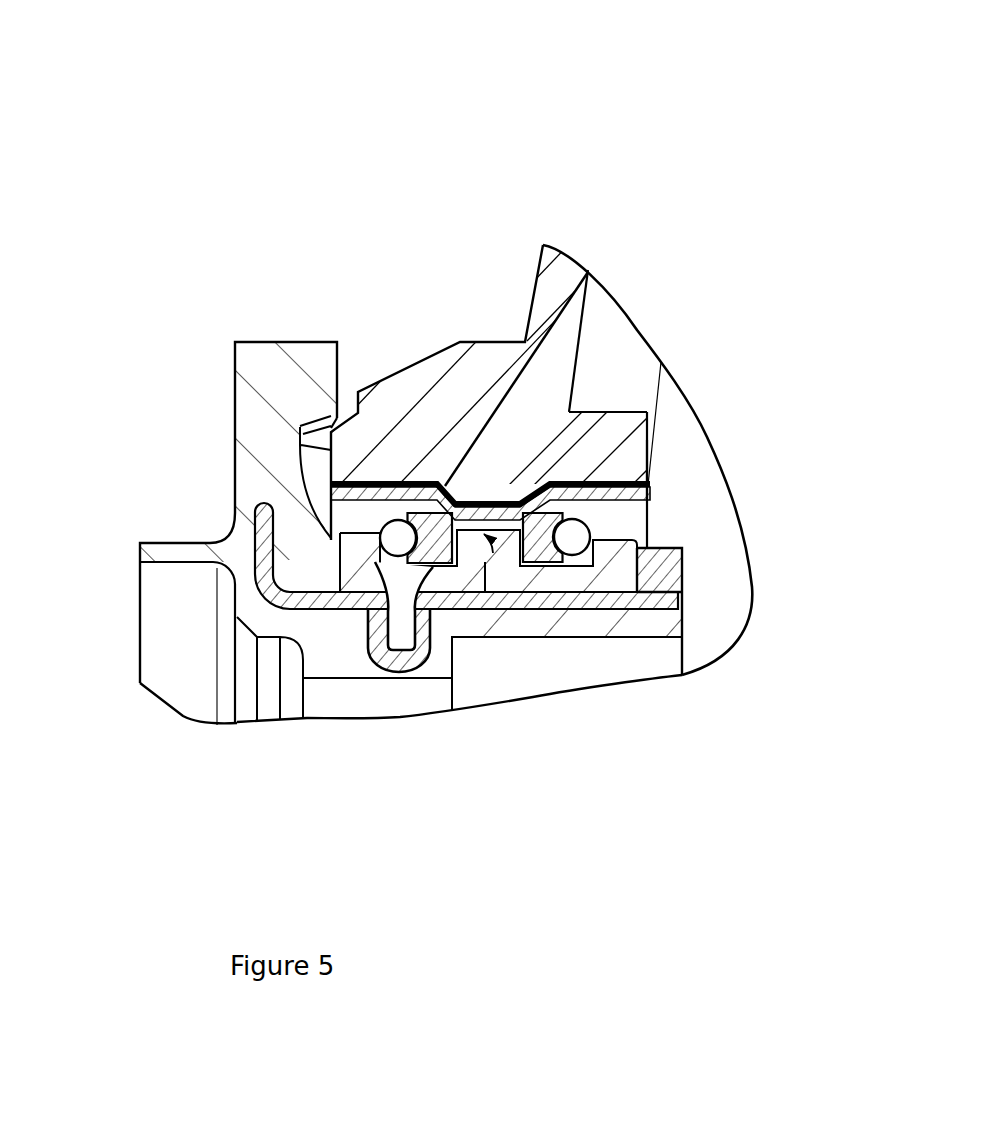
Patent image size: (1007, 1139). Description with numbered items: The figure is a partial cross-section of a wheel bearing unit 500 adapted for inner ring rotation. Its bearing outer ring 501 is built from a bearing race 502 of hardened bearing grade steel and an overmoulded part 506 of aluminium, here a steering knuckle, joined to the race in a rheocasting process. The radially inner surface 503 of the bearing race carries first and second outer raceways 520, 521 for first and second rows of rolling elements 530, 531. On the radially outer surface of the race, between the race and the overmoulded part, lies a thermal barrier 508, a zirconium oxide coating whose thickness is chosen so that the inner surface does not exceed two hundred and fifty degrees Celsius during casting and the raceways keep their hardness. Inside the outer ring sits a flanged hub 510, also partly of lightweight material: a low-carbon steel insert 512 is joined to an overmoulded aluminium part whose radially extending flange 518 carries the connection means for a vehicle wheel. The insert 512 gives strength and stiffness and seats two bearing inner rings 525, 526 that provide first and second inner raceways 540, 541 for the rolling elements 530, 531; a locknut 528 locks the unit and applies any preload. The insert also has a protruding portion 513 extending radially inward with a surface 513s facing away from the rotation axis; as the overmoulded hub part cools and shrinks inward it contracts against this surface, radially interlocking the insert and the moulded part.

The wheel bearing unit 500 is at (629, 109).
The bearing outer ring 501 is at (582, 414).
The bearing race 502 is at (650, 493).
The radially inner surface 503 is at (615, 414).
The overmoulded part 506 is at (383, 420).
The thermal barrier 508 is at (652, 481).
The flanged hub 510 is at (216, 326).
The insert 512 is at (255, 560).
The protruding portion 513 is at (412, 660).
The surface of portion 513s is at (364, 640).
The radially extending flange 518 is at (260, 420).
The first outer raceway 520 is at (605, 369).
The second outer raceway 521 is at (648, 460).
The first bearing inner ring 525 is at (405, 568).
The second bearing inner ring 526 is at (575, 585).
The locknut 528 is at (662, 592).
The first row of rolling elements 530 is at (393, 540).
The second row of rolling elements 531 is at (577, 532).
The first inner raceway 540 is at (440, 570).
The second inner raceway 541 is at (584, 561).